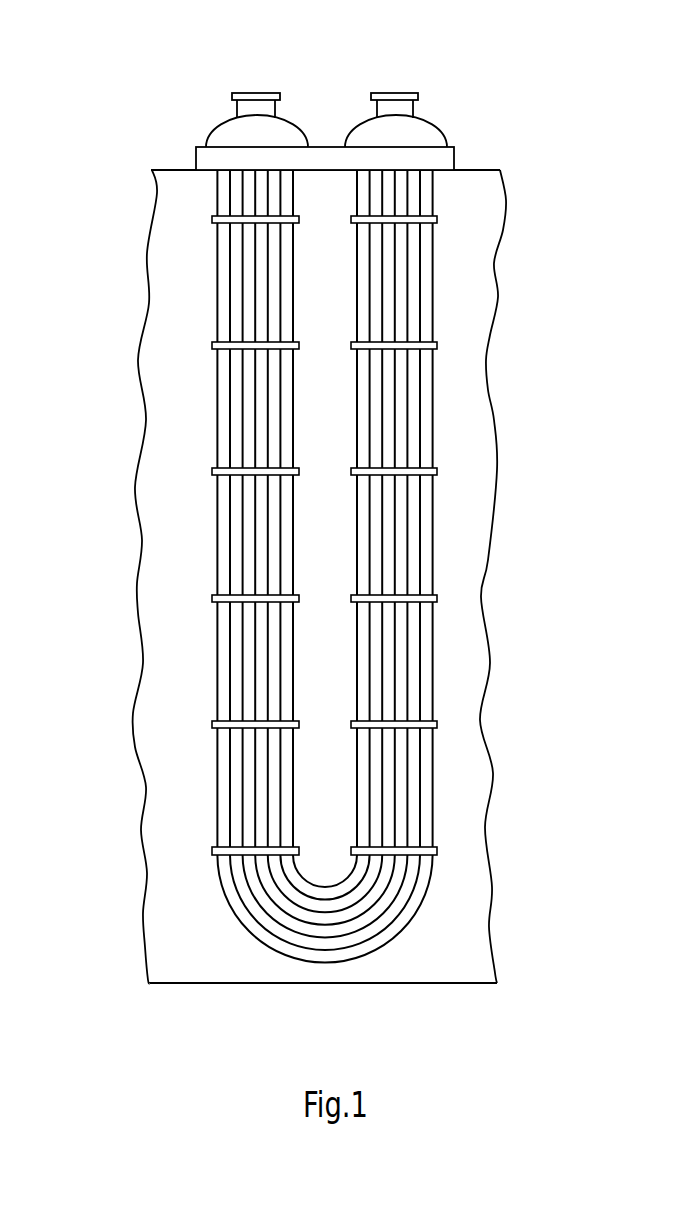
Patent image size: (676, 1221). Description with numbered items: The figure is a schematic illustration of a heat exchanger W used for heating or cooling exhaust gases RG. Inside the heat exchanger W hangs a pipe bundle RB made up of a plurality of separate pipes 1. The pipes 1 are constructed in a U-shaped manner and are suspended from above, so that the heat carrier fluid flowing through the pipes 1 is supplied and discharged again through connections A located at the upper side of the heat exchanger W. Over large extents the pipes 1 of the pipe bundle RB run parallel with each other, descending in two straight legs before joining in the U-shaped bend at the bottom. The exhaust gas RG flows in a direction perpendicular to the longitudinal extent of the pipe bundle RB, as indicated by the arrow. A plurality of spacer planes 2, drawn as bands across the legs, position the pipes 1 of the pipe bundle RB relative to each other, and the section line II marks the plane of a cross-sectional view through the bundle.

The pipe 1 is at (330, 485).
The spacer plane 2 is at (213, 724).
The connection A is at (378, 93).
The heat exchanger W is at (170, 192).
The pipe bundle RB is at (410, 279).
The exhaust gas RG is at (180, 517).
The section line II- II is at (166, 583).